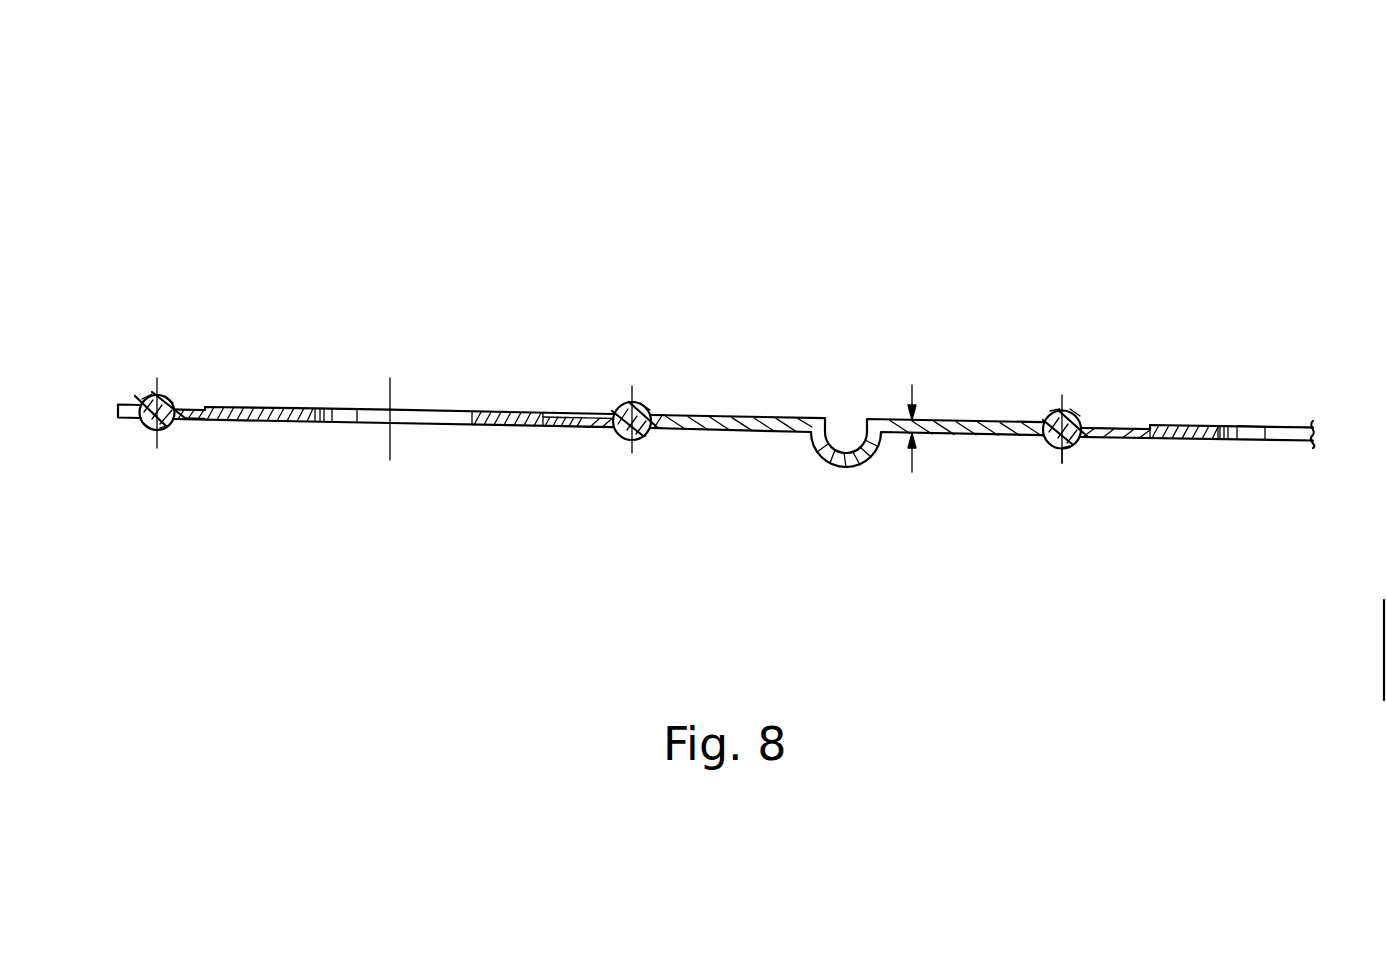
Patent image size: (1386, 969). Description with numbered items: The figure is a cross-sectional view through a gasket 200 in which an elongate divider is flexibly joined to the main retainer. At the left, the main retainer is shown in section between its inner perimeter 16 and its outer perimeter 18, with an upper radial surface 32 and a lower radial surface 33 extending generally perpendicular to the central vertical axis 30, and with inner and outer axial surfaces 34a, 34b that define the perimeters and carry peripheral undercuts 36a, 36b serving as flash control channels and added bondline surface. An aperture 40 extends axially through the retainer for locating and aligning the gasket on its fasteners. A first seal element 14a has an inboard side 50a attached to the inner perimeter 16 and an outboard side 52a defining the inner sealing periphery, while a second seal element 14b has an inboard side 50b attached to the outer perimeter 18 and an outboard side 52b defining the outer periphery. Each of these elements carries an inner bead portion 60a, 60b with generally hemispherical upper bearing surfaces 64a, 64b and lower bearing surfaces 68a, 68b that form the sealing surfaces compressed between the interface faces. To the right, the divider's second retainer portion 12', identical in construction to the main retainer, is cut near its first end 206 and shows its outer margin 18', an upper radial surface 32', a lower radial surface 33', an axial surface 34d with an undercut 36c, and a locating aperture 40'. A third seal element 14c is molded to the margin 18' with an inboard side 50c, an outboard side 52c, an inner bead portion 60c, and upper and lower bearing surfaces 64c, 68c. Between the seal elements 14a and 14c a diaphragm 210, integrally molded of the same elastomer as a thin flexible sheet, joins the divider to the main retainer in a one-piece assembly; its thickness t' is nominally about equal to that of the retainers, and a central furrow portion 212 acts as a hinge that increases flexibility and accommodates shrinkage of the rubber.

The gasket 200 is at (1035, 107).
The second retainer portion 12' is at (1275, 365).
The first seal element 14a is at (134, 406).
The second seal element 14b is at (626, 404).
The third seal element 14c is at (1046, 434).
The inner perimeter 16 is at (600, 430).
The outer perimeter 18 is at (211, 453).
The outer perimeter 18' is at (1106, 466).
The central vertical axis 30 is at (1384, 650).
The upper radial surface 32 is at (499, 381).
The first hatched section 32' is at (1225, 349).
The lower radial surface 33 is at (503, 460).
The end portion 33' is at (1221, 478).
The inner axial surface 34a is at (596, 416).
The outer axial surface 34b is at (198, 404).
The transition portion 34d is at (1066, 454).
The peripheral undercut 36a is at (546, 412).
The peripheral undercut 36b is at (240, 406).
The tapered portion 36c is at (1134, 424).
The aperture 40 is at (369, 378).
The reference line 40' is at (1309, 383).
The inboard side 50a is at (536, 427).
The inboard side 50b is at (265, 422).
The lower hatched section 50c is at (1160, 440).
The outboard side 52a is at (652, 432).
The outboard side 52b is at (146, 428).
The lower surface 52c is at (1044, 424).
The inner bead portion 60a is at (655, 414).
The inner bead portion 60b is at (170, 404).
The upper portion 60c is at (1049, 410).
The upper bearing surface 64a is at (650, 404).
The upper bearing surface 64b is at (146, 396).
The upper surface 64c is at (1072, 414).
The lower bearing surface 68a is at (641, 440).
The lower bearing surface 68b is at (164, 430).
The lower portion 68c is at (1055, 448).
The first end 206 is at (1166, 424).
The diaphragm 210 is at (804, 419).
The central furrow portion 212 is at (826, 460).
The thickness t' is at (890, 397).